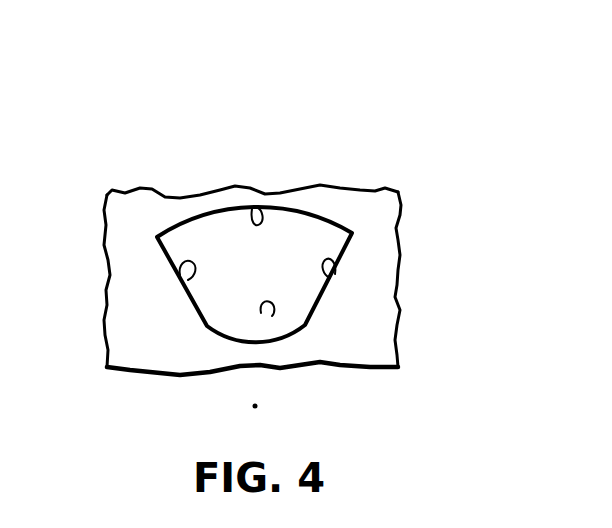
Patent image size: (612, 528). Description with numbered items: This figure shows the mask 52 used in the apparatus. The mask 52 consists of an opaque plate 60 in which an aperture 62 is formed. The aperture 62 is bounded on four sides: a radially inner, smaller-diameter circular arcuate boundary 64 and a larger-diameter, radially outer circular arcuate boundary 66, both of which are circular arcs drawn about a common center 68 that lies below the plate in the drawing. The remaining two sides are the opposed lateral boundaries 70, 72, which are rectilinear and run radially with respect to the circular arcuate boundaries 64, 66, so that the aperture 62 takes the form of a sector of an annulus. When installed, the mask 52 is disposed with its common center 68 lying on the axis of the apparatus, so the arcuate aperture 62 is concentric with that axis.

The mask 52 is at (398, 245).
The opaque plate 60 is at (399, 330).
The aperture 62 is at (272, 281).
The radially inner circular arcuate boundary 64 is at (272, 316).
The radially outer circular arcuate boundary 66 is at (262, 216).
The common center 68 is at (255, 406).
The opposed lateral boundary 70 is at (186, 282).
The opposed lateral boundary 72 is at (330, 278).